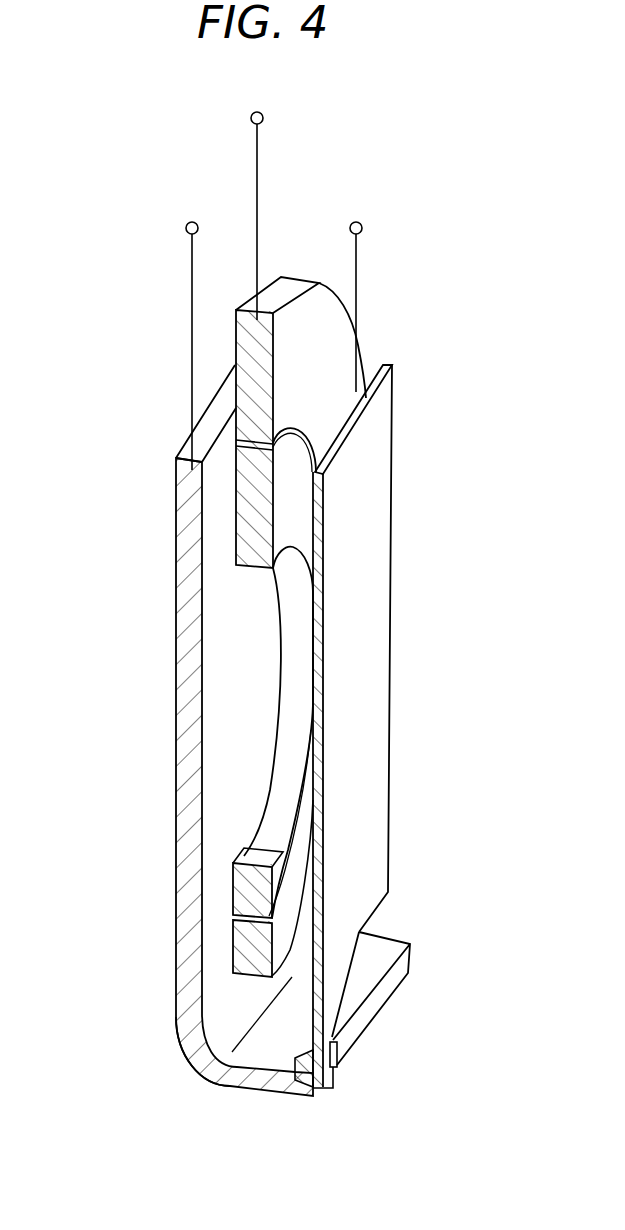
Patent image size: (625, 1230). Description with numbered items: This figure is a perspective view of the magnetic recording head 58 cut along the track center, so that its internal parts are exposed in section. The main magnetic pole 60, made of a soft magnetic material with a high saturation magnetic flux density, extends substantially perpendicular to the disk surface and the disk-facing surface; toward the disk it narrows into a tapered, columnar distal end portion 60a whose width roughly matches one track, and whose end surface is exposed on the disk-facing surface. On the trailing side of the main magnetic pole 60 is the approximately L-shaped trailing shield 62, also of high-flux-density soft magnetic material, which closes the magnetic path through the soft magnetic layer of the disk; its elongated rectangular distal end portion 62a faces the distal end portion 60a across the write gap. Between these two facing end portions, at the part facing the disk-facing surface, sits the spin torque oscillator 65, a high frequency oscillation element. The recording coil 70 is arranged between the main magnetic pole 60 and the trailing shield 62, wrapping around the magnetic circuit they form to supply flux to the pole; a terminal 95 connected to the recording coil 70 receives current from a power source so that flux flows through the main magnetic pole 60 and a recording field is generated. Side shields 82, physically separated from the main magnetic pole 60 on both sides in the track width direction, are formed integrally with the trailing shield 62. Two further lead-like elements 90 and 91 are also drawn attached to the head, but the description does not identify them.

The recording head 58 is at (147, 609).
The main magnetic pole 60 is at (355, 773).
The distal end portion of the main magnetic pole 60a is at (327, 1083).
The trailing shield 62 is at (176, 880).
The distal end portion of the trailing shield 62a is at (213, 1085).
The spin torque oscillator 65 is at (303, 1092).
The recording coil 70 is at (236, 332).
The side shield 82 is at (372, 973).
The lead 90 is at (356, 222).
The lead 91 is at (186, 228).
The terminal 95 is at (251, 118).